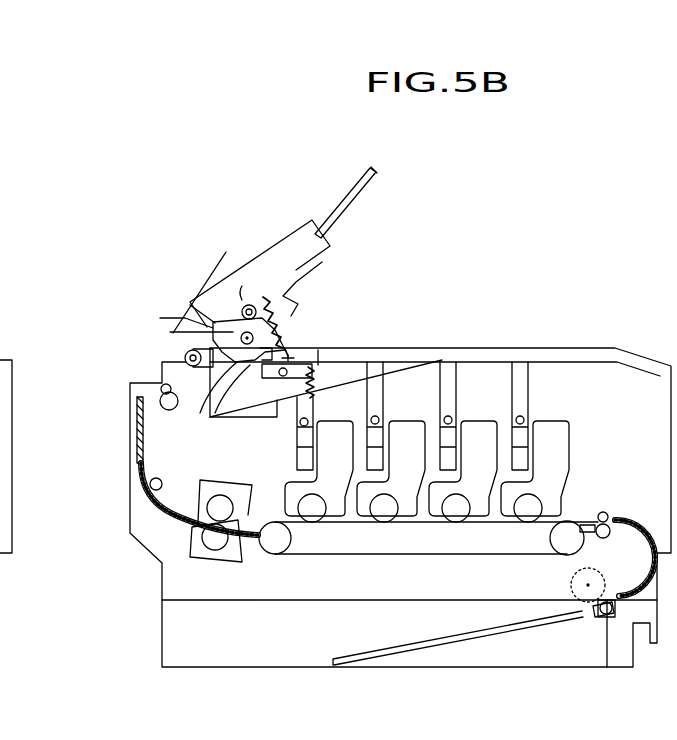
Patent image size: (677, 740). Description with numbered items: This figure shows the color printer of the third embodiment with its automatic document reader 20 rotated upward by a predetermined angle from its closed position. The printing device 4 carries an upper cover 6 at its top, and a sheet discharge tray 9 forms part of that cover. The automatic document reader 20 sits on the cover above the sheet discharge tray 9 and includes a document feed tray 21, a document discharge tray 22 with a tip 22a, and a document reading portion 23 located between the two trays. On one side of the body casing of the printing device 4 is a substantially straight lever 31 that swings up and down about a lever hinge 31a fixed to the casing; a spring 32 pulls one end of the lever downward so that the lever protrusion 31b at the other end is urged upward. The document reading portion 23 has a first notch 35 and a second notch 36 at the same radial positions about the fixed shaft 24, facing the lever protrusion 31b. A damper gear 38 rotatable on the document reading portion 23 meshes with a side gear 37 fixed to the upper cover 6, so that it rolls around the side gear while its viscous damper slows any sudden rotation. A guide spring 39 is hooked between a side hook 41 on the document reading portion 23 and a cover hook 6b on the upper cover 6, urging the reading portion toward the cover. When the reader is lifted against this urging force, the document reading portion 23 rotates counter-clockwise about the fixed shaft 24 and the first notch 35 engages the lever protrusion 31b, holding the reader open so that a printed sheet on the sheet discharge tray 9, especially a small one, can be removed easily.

The printing device 4 is at (128, 480).
The upper cover 6 is at (480, 348).
The cover hook 6b is at (326, 350).
The sheet discharge tray 9 is at (395, 364).
The automatic document reader 20 is at (245, 246).
The document feed tray 21 is at (173, 335).
The document discharge tray 22 is at (335, 208).
The tip 22a is at (375, 178).
The document reading portion 23 is at (288, 242).
The fixed shaft 24 is at (160, 318).
The lever 31 is at (257, 374).
The lever hinge 31a is at (283, 380).
The lever protrusion 31b is at (220, 413).
The spring 32 is at (312, 390).
The first notch 35 is at (190, 375).
The second notch 36 is at (280, 340).
The side gear 37 is at (223, 302).
The damper gear 38 is at (256, 290).
The guide spring 39 is at (292, 309).
The side hook 41 is at (303, 278).